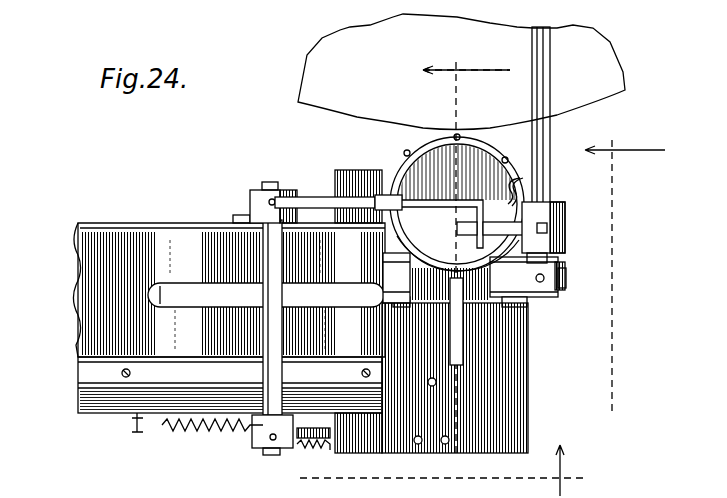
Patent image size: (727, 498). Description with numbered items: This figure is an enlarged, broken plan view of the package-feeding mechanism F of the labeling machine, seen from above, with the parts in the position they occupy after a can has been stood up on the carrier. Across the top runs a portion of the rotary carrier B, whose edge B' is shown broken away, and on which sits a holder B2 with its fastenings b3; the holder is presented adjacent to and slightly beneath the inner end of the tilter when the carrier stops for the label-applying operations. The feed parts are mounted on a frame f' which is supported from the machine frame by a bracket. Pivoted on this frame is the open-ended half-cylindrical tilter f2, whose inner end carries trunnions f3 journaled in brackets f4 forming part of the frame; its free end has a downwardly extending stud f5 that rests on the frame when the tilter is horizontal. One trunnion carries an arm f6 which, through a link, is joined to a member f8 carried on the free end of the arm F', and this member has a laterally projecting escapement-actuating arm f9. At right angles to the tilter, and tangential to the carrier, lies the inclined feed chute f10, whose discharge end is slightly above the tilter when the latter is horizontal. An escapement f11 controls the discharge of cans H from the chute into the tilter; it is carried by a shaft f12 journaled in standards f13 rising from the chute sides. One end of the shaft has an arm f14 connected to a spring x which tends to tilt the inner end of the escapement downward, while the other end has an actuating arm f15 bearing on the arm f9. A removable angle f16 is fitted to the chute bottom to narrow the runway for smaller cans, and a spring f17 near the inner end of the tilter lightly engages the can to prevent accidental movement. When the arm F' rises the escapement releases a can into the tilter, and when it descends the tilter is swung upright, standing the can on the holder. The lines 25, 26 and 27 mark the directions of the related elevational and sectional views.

The rotary carrier B is at (461, 72).
The base plate edge B' is at (409, 114).
The holder B2 is at (398, 165).
The ring bolts b3 is at (463, 141).
The feed mechanism F is at (229, 269).
The arm F' is at (557, 115).
The can H is at (293, 262).
The frame f' is at (472, 378).
The tilter f2 is at (440, 268).
The trunnions f3 is at (557, 290).
The brackets f4 is at (530, 302).
The stud f5 is at (463, 330).
The arm f6 is at (558, 262).
The member f8 is at (566, 228).
The escapement-actuating arm f9 is at (460, 228).
The feed chute f10 is at (77, 265).
The escapement f11 is at (150, 295).
The shaft f12 is at (272, 182).
The standards f13 is at (240, 217).
The arm f14 is at (305, 440).
The actuating arm f15 is at (315, 197).
The removable angle f16 is at (100, 368).
The spring f17 is at (520, 190).
The spring x is at (195, 432).
The line 25 is at (474, 470).
The line 26 is at (625, 268).
The line 27 is at (466, 246).